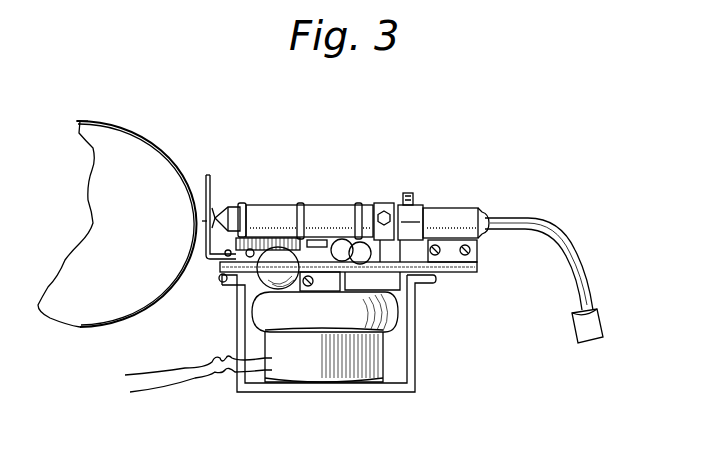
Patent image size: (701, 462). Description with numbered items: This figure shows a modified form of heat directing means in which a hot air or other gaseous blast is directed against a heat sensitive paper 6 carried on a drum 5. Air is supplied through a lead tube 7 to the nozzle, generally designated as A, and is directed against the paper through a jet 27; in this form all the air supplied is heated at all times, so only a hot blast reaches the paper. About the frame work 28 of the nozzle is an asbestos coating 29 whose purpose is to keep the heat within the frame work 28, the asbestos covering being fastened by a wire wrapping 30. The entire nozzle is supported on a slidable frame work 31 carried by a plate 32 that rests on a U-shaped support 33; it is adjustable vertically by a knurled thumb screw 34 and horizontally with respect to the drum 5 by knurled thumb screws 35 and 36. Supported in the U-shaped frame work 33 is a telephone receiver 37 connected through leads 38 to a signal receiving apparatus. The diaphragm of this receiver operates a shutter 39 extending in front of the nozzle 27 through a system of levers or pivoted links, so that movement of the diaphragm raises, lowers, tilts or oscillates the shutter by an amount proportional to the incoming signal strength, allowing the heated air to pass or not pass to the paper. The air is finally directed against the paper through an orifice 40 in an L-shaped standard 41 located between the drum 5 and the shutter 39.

The drum 5 is at (124, 136).
The heat sensitive paper 6 is at (174, 160).
The lead tube 7 is at (592, 286).
The jet 27 is at (226, 212).
The frame work 28 is at (448, 208).
The asbestos coating 29 is at (274, 205).
The wire wrapping 30 is at (244, 210).
The slidable frame work 31 is at (222, 263).
The plate 32 is at (223, 279).
The U-shaped support 33 is at (250, 390).
The knurled thumb screw 34 is at (263, 272).
The knurled thumb screw 35 is at (341, 260).
The knurled thumb screw 36 is at (360, 264).
The telephone receiver 37 is at (385, 365).
The leads 38 is at (198, 374).
The shutter 39 is at (214, 212).
The orifice 40 is at (203, 222).
The L-shaped standard 41 is at (209, 178).
The nozzle A is at (322, 207).